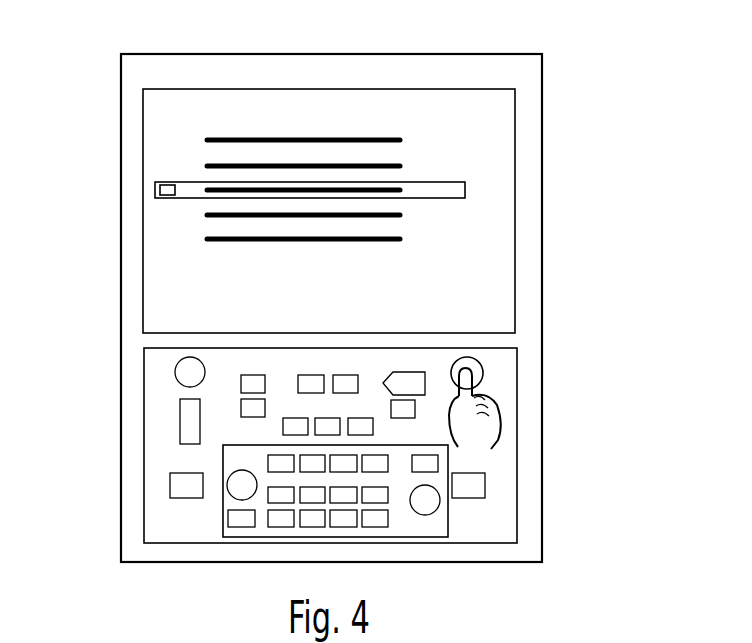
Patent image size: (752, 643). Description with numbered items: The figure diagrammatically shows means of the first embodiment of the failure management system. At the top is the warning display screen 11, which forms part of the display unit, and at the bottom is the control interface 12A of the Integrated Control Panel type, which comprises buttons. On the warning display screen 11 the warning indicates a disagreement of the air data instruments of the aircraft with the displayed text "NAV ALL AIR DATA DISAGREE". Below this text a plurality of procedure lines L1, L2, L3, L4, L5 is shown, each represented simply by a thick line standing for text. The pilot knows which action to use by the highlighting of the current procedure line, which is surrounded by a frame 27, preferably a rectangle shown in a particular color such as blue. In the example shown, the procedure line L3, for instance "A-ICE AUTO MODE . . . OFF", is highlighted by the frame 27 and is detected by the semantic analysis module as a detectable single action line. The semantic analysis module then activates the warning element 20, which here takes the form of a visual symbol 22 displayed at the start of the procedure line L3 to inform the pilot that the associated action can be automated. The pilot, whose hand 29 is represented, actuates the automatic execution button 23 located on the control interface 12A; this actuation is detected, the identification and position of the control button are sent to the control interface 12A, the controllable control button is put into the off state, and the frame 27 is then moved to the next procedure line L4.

The warning display screen 11 is at (246, 89).
The first procedure line L1 is at (210, 140).
The procedure line L2 is at (215, 165).
The procedure line L3 is at (208, 193).
The procedure line L4 is at (215, 218).
The procedure line L5 is at (222, 243).
The warning element 20 is at (245, 209).
The symbol 22 is at (159, 187).
The frame 27 is at (448, 198).
The automatic execution button 23 is at (478, 359).
The hand 29 is at (500, 415).
The control interface 12A is at (517, 484).